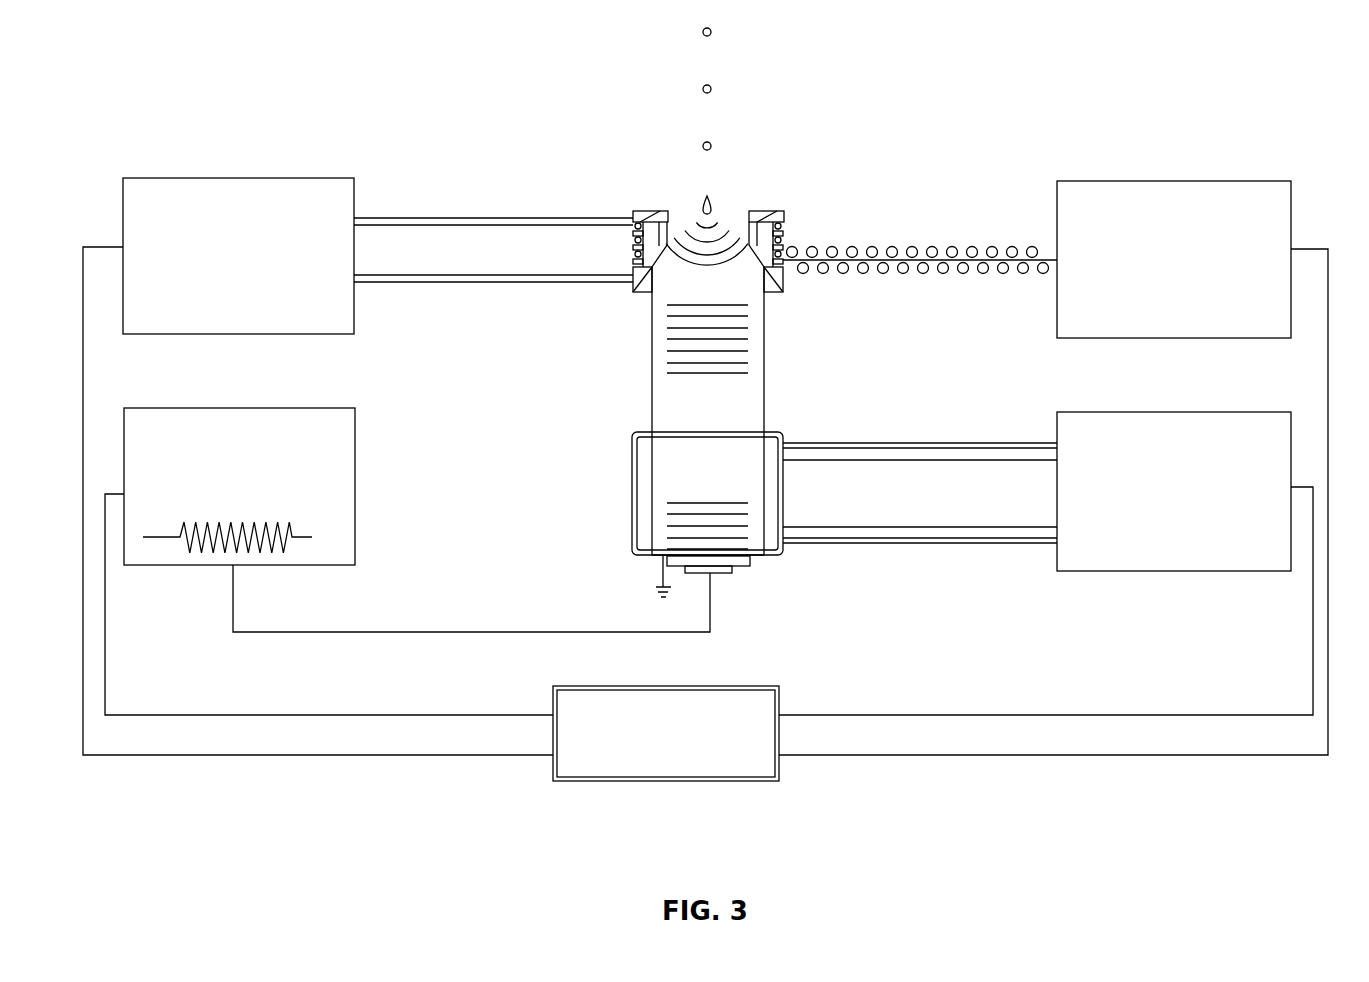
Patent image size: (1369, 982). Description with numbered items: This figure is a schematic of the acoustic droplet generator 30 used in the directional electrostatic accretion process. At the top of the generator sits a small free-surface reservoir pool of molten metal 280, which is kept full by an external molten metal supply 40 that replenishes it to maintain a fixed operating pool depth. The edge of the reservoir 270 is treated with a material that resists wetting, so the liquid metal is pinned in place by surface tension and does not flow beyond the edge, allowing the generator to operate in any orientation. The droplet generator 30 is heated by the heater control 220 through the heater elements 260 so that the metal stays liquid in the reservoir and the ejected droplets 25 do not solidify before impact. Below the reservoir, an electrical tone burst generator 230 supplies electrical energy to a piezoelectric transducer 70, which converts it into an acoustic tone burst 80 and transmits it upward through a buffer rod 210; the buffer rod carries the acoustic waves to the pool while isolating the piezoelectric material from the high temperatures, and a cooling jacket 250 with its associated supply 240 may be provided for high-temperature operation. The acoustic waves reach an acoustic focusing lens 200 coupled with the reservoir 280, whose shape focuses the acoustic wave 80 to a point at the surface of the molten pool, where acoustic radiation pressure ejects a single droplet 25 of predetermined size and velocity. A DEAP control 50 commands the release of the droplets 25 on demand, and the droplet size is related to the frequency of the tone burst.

The molten metal droplets 25 is at (717, 145).
The droplet generator 30 is at (662, 408).
The molten metal supply 40 is at (1146, 181).
The DEAP control 50 is at (710, 781).
The piezoelectric transducer 70 is at (738, 568).
The acoustic tone burst 80 is at (748, 323).
The acoustic focusing lens 200 is at (690, 258).
The buffer rod 210 is at (655, 358).
The heater control 220 is at (204, 178).
The electrical tone burst generator 230 is at (205, 408).
The coolant supply 240 is at (1130, 412).
The cooling jacket 250 is at (792, 436).
The heater elements 260 is at (787, 218).
The edge of the reservoir 270 is at (748, 212).
The molten metal reservoir 280 is at (693, 213).